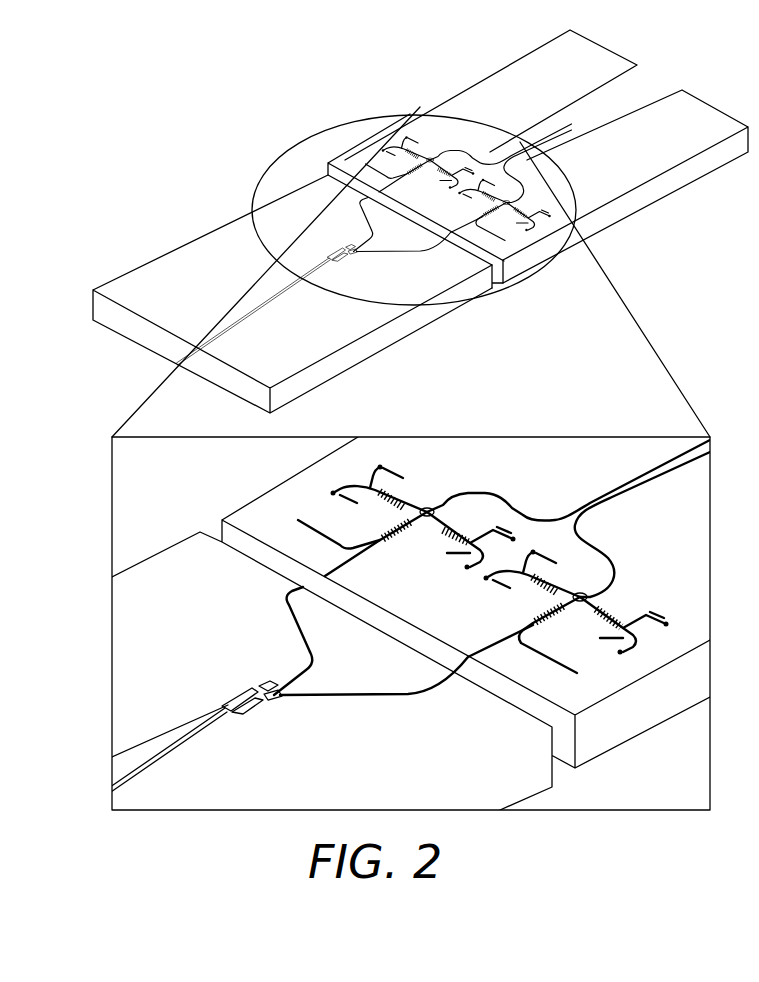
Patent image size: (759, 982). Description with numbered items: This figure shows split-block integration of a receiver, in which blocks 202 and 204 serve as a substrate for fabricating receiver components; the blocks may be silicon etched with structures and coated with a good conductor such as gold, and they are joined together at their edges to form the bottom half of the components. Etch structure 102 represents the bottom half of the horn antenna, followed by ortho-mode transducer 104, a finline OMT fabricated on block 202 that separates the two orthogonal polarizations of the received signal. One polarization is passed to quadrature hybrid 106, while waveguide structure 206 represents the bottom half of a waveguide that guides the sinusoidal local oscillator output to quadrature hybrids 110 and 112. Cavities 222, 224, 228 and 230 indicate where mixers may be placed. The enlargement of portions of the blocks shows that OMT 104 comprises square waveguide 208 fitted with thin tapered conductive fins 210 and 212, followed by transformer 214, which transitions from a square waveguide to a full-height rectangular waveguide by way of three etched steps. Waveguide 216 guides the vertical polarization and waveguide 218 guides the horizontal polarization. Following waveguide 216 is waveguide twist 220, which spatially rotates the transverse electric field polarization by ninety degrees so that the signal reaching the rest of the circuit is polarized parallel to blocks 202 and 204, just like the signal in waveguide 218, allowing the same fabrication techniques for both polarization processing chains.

The horn antenna 102 is at (178, 352).
The ortho-mode transducer 104 is at (342, 250).
The quadrature hybrid 106 is at (390, 152).
The quadrature hybrid 110 is at (459, 170).
The quadrature hybrid 112 is at (452, 165).
The block 202 is at (139, 266).
The block 204 is at (720, 163).
The waveguide structure 206 is at (637, 77).
The square waveguide 208 is at (205, 720).
The tapered conductive fin 210 is at (228, 702).
The tapered conductive fin 212 is at (248, 710).
The transformer 214 is at (272, 683).
The waveguide 216 is at (311, 664).
The waveguide 218 is at (368, 697).
The waveguide twist 220 is at (281, 611).
The cavity 222 is at (387, 152).
The cavity 224 is at (410, 138).
The cavity 228 is at (457, 178).
The cavity 230 is at (503, 163).